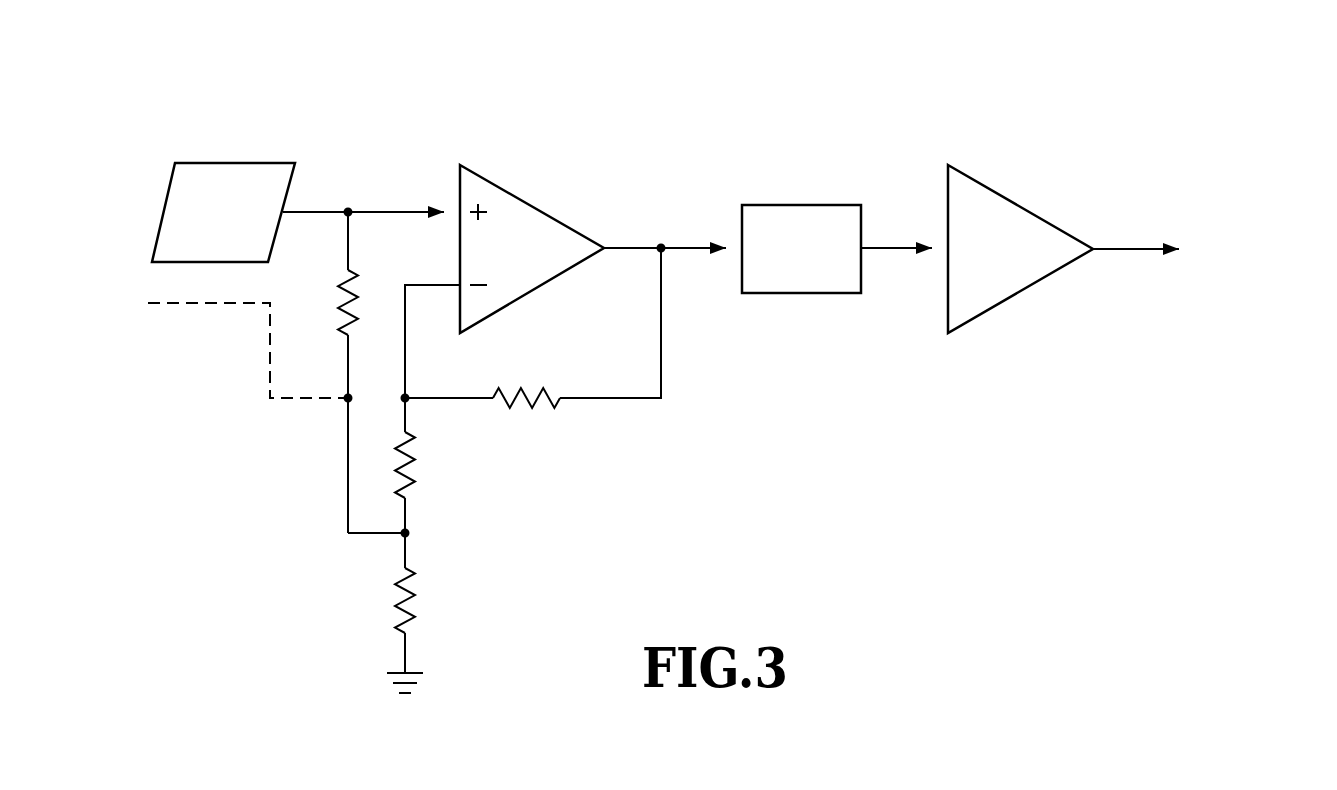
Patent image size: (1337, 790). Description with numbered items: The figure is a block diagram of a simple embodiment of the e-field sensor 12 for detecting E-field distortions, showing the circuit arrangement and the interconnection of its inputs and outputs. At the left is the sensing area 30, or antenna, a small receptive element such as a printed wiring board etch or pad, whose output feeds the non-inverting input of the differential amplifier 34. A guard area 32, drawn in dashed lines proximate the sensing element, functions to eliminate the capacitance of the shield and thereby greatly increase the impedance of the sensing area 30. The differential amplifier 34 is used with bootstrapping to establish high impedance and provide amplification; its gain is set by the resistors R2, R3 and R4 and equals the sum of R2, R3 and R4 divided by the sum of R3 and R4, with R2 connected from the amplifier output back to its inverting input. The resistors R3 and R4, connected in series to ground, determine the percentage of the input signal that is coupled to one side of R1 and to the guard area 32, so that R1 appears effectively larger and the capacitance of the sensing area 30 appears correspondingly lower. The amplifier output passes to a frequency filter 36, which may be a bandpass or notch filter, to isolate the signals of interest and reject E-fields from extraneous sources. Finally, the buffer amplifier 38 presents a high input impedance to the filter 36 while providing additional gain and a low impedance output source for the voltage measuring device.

The e-field sensor 12 is at (885, 110).
The sensing area 30 is at (207, 227).
The guard area 32 is at (208, 305).
The differential amplifier 34 is at (498, 264).
The frequency filter 36 is at (783, 264).
The buffer amplifier 38 is at (988, 264).
The resistor R1 is at (331, 302).
The resistor R2 is at (526, 385).
The resistor R3 is at (422, 465).
The resistor R4 is at (422, 600).